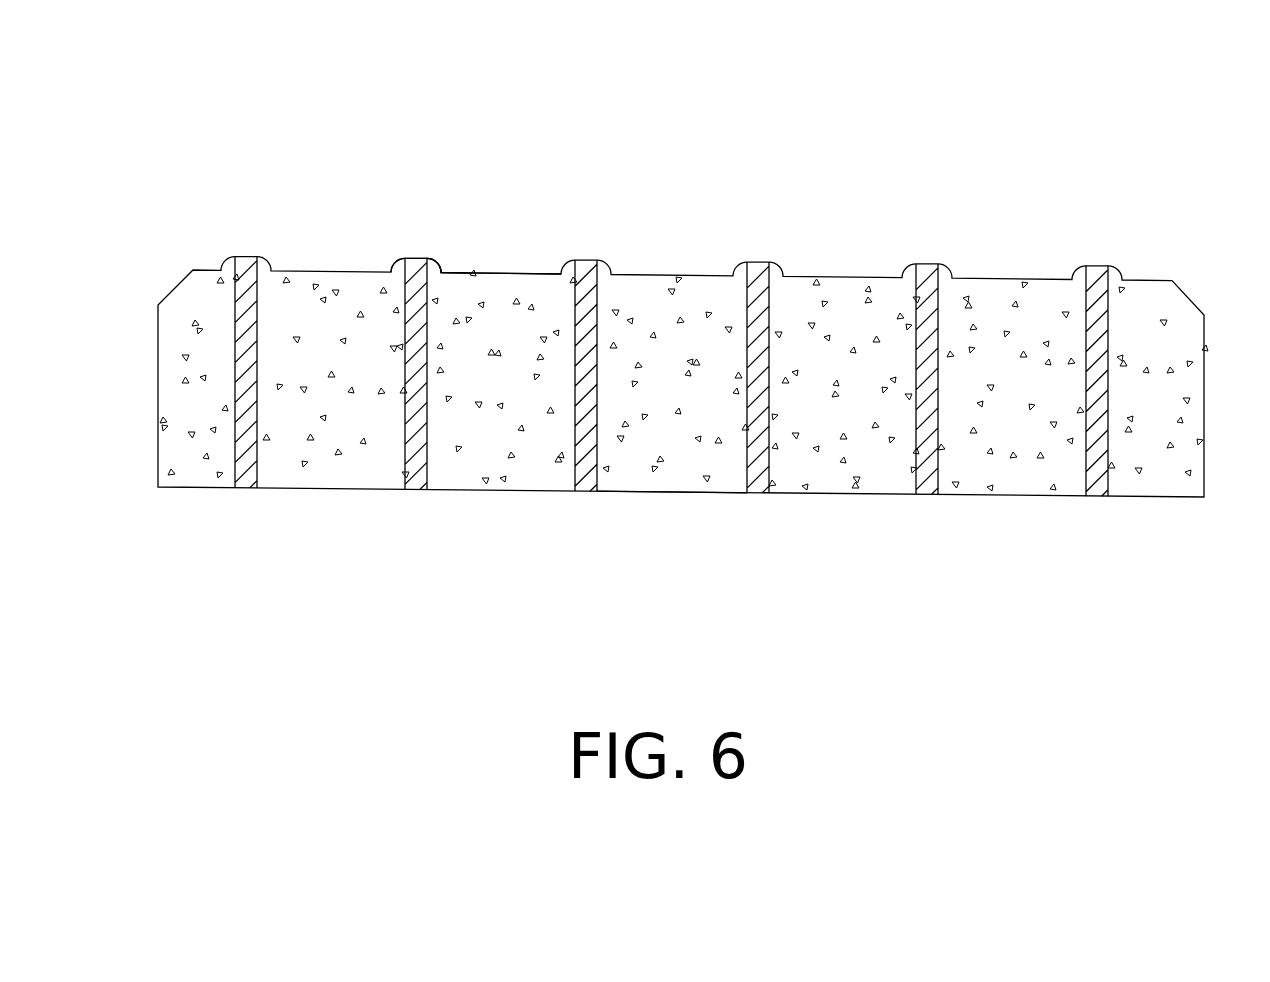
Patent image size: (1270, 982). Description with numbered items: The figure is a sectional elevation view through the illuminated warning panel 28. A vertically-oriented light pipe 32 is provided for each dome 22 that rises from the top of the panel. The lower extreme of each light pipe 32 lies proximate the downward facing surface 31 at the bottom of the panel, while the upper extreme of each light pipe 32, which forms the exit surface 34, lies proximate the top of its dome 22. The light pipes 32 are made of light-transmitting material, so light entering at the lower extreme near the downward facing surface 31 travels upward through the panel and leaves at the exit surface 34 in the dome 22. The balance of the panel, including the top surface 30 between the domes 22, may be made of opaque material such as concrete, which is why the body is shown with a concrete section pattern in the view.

The precast concrete panel 28 is at (335, 202).
The dome 22 is at (437, 262).
The top surface 30 is at (513, 272).
The downward facing surface 31 is at (668, 492).
The light pipe 32 is at (423, 455).
The exit surface 34 is at (415, 260).